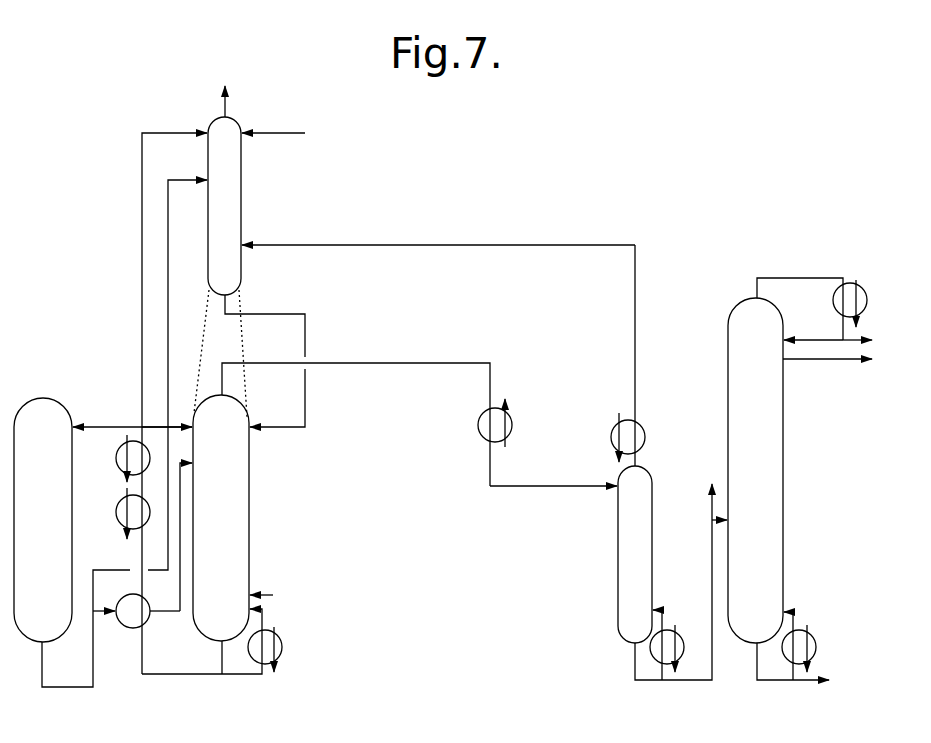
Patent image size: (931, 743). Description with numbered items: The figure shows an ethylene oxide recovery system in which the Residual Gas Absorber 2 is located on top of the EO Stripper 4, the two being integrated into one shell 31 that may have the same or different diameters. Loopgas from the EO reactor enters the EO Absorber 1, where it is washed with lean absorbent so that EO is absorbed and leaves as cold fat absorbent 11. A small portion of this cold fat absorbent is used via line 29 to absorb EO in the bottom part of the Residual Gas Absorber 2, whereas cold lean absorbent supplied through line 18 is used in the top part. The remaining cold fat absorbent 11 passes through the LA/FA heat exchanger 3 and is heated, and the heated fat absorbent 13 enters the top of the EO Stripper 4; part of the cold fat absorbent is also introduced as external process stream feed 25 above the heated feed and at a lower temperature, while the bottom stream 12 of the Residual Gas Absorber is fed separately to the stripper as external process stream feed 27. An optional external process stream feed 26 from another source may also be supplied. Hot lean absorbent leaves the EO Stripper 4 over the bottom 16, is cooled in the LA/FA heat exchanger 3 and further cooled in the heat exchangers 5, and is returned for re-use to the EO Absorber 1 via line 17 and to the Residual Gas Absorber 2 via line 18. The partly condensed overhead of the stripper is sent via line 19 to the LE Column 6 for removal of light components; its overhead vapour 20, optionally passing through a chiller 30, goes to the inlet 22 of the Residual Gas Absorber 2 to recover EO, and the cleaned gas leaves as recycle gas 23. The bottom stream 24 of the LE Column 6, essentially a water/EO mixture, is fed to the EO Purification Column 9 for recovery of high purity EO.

The EO Absorber 1 is at (35, 410).
The Residual Gas Absorber 2 is at (225, 208).
The LA/FA heat exchanger 3 is at (129, 616).
The EO Stripper 4 is at (222, 523).
The heat exchangers 5 is at (122, 457).
The LE Column 6 is at (635, 575).
The EO Purification Column 9 is at (758, 472).
The Fat Absorbent 11 is at (42, 662).
The bottom stream of the Residual Gas Absorber 12 is at (222, 305).
The heated FA feed 13 is at (180, 457).
The bottom stream of the EO Stripper 16 is at (222, 653).
The line to the EO Absorber 17 is at (88, 422).
The line to the Residual Gas Absorber 18 is at (187, 131).
The line to the LE Column 19 is at (605, 488).
The overhead vapour of the LE Column 20 is at (635, 460).
The inlet line to the Residual Gas Absorber 22 is at (253, 248).
The recycle gas 23 is at (225, 102).
The bottom stream of the LE Column 24 is at (635, 660).
The external process stream feed 25 is at (178, 423).
The optional external process stream feed 26 is at (260, 135).
The external process stream feed 27 is at (263, 428).
The cold FA portion to the Residual Gas Absorber 29 is at (186, 178).
The optional chiller 30 is at (642, 433).
The integrated single shell 31 is at (226, 342).